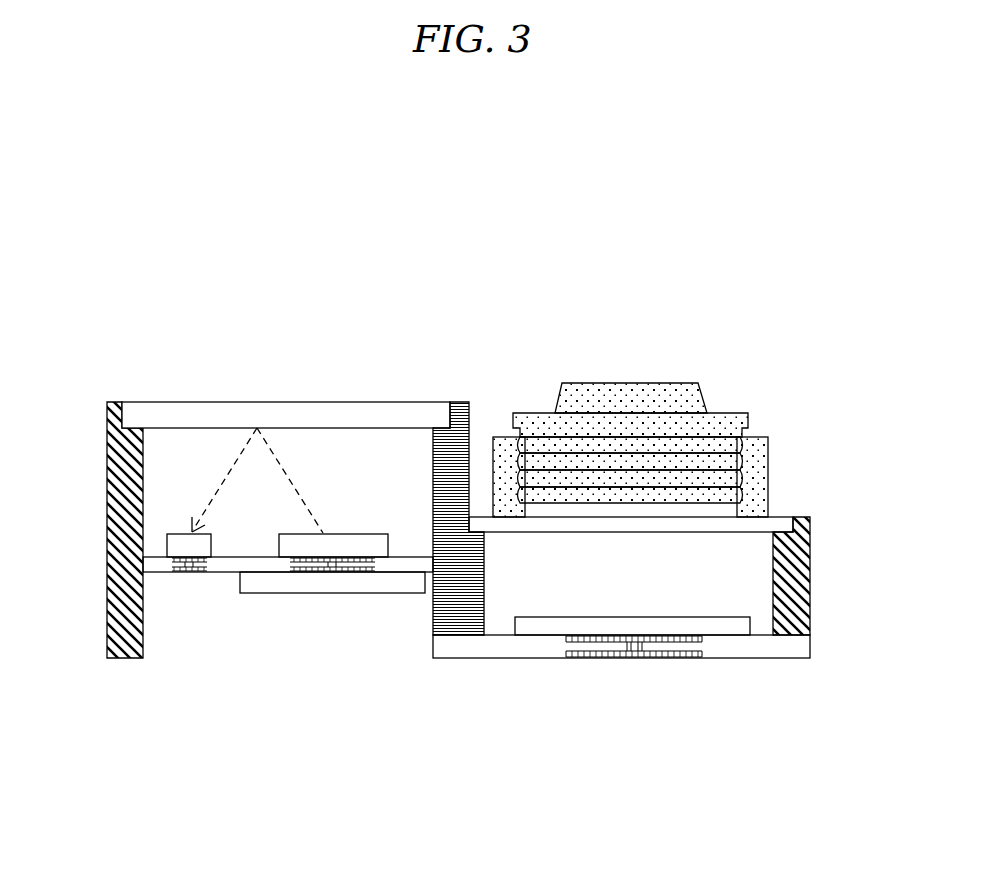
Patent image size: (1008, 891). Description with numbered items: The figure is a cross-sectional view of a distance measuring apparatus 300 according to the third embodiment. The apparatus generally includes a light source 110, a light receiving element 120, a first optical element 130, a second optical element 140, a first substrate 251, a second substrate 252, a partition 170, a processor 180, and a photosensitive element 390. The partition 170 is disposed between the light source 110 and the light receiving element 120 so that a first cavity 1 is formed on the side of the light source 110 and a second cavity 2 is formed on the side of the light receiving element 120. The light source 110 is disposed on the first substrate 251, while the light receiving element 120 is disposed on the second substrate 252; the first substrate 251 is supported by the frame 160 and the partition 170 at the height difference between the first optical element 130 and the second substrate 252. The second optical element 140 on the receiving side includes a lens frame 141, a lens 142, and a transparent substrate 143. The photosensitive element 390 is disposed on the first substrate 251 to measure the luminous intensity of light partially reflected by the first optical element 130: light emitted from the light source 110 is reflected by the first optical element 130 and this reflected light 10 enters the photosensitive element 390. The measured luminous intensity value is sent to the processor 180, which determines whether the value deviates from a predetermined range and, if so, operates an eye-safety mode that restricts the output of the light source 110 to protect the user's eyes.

The distance measuring apparatus 300 is at (163, 239).
The first cavity 1 is at (185, 462).
The reflected light 10 is at (268, 441).
The first optical element 130 is at (343, 402).
The partition 170 is at (458, 402).
The second optical element 140 is at (698, 393).
The lens 142 is at (718, 413).
The lens frame 141 is at (768, 450).
The transparent substrate 143 is at (808, 518).
The frame 160 is at (808, 555).
The second cavity 2 is at (709, 619).
The light receiving element 120 is at (750, 622).
The second substrate 252 is at (500, 658).
The light source 110 is at (355, 546).
The processor 180 is at (292, 593).
The first substrate 251 is at (163, 572).
The photosensitive element 390 is at (167, 547).